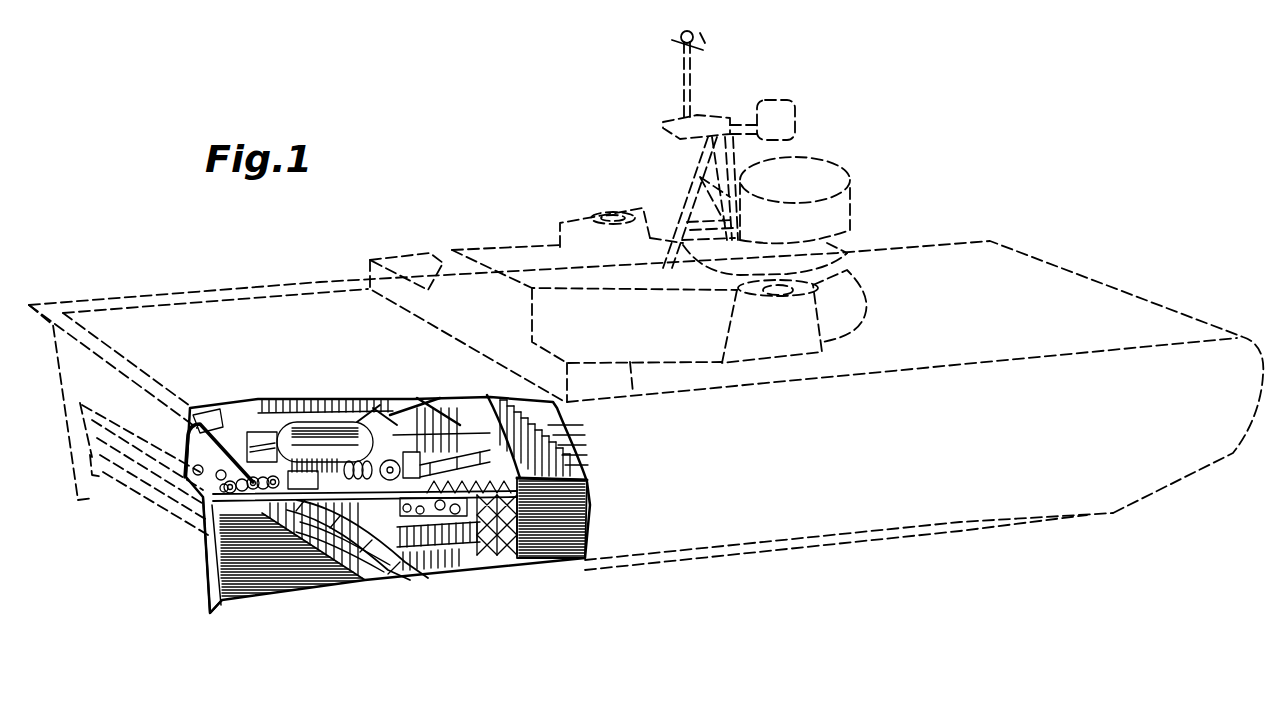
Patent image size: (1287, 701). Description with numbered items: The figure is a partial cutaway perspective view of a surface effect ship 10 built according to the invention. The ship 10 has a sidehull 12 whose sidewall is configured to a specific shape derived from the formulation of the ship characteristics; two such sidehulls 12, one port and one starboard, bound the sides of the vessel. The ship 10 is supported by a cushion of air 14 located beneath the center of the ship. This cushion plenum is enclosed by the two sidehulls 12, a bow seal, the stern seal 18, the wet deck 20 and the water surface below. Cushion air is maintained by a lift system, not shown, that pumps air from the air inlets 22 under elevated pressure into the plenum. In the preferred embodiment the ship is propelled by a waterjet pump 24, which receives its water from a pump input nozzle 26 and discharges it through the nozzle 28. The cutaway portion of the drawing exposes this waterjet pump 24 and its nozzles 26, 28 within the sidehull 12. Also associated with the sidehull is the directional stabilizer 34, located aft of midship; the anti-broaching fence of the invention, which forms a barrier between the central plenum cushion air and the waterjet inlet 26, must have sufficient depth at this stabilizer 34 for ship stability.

The surface effect ship 10 is at (452, 192).
The sidehull 12 is at (823, 446).
The cushion of air 14 is at (575, 524).
The stern seal 18 is at (167, 492).
The wet deck 20 is at (570, 483).
The air inlets 22 is at (573, 352).
The waterjet pump 24 is at (424, 393).
The pump input nozzle 26 is at (395, 570).
The nozzle 28 is at (178, 430).
The directional stabilizer 34 is at (212, 607).